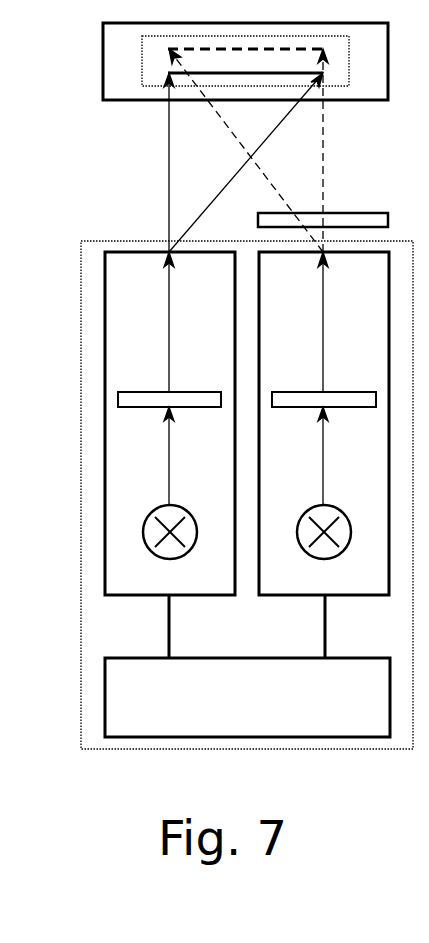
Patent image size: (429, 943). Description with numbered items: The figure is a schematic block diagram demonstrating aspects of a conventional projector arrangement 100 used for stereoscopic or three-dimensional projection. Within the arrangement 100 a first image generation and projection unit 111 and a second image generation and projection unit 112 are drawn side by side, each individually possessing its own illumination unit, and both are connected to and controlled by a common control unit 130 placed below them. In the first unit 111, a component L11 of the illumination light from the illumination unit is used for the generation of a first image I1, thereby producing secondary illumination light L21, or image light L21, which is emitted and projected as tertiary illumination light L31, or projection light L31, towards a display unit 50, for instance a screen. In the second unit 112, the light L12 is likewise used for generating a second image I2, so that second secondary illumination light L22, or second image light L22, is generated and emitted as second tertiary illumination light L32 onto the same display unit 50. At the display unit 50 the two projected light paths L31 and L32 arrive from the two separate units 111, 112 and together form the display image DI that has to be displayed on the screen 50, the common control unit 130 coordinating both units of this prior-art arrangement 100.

The display unit 50 is at (221, 76).
The conventional projector arrangement 100 is at (224, 495).
The first image generation and projection unit 111 is at (170, 451).
The second image generation and projection unit 112 is at (324, 451).
The common control unit 130 is at (247, 697).
The first image I1 is at (169, 385).
The second image I2 is at (324, 385).
The component of primary illumination light L11 is at (148, 456).
The part of illumination light for second unit L12 is at (346, 456).
The secondary illumination light L21 is at (147, 322).
The second secondary illumination light L22 is at (346, 322).
The tertiary illumination light L31 is at (221, 162).
The second tertiary illumination light L32 is at (269, 150).
The display image DI is at (361, 56).